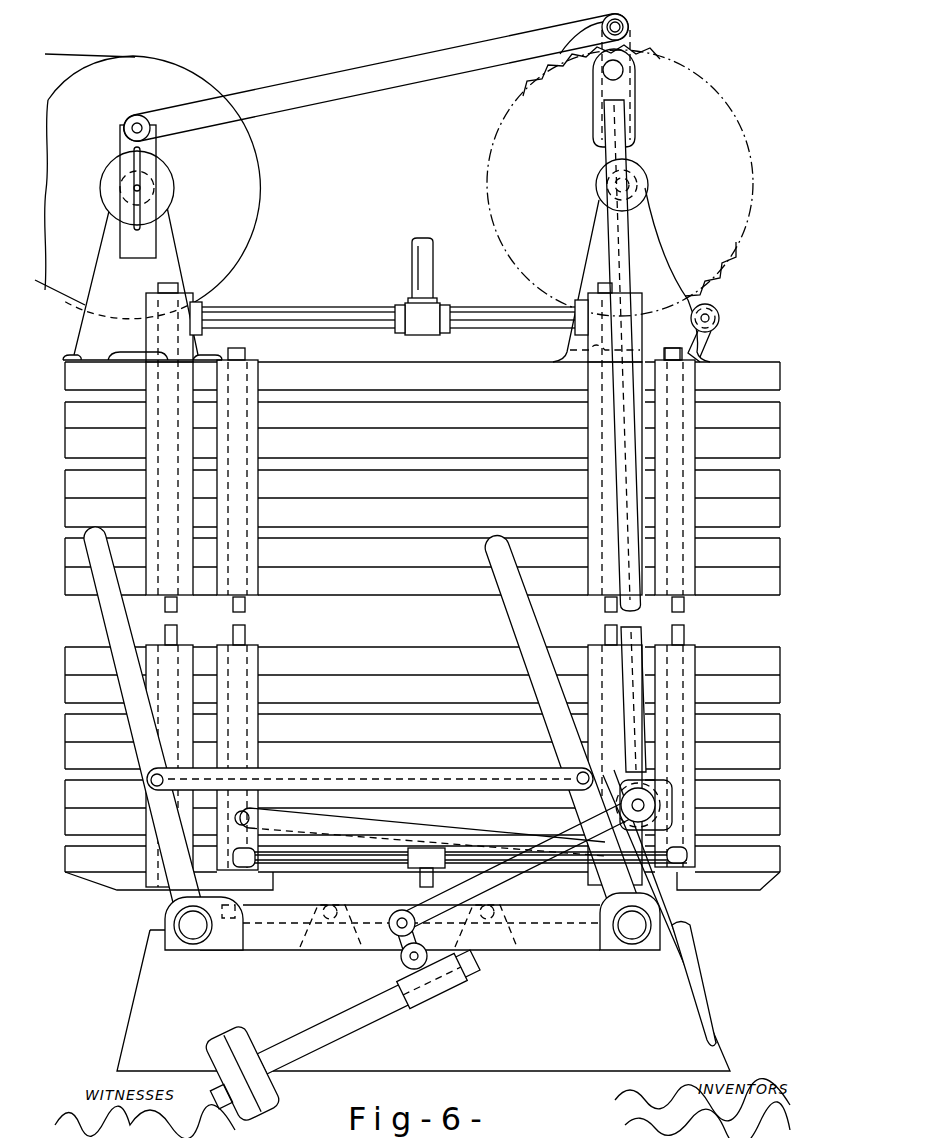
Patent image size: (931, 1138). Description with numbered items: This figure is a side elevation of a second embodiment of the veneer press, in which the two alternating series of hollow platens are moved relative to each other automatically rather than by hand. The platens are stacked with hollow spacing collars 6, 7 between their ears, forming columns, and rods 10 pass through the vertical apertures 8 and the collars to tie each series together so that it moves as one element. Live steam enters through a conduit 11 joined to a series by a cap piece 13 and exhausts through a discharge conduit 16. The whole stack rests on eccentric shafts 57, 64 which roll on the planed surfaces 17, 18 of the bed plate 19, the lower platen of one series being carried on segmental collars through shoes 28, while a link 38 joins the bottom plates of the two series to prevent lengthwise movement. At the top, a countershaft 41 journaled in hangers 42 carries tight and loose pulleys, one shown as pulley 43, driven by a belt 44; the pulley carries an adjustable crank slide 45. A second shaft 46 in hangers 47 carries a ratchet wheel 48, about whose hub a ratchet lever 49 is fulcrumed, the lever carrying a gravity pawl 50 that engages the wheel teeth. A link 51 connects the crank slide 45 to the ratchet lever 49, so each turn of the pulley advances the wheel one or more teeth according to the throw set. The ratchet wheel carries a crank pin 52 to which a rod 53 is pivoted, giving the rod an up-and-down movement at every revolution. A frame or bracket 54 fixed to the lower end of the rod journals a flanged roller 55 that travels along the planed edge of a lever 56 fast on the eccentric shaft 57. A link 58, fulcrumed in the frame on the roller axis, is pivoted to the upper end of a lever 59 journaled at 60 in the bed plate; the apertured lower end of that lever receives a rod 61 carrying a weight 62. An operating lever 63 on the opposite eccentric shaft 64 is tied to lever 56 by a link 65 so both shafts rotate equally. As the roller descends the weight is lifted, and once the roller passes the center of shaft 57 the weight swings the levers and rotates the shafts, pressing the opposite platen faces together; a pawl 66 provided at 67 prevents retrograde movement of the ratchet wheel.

The spacing collar 6 is at (592, 688).
The spacing collar 7 is at (250, 486).
The vertical aperture 8 is at (590, 443).
The rod 10 is at (232, 629).
The conduit 11 is at (424, 240).
The cap piece 13 is at (147, 331).
The discharge conduit 16 is at (326, 860).
The planed surface 17 is at (208, 952).
The planed surface 18 is at (625, 952).
The bed plate 19 is at (423, 920).
The shoe 28 is at (268, 890).
The link 38 is at (388, 833).
The countershaft 41 is at (140, 188).
The hanger 42 is at (142, 283).
The pulley 43 is at (154, 187).
The belt 44 is at (85, 170).
The crank slide 45 is at (126, 141).
The second shaft 46 is at (612, 186).
The hanger 47 is at (631, 275).
The ratchet wheel 48 is at (620, 183).
The ratchet lever 49 is at (620, 27).
The gravity pawl 50 is at (604, 21).
The link 51 is at (364, 78).
The crank pin 52 is at (623, 73).
The rod 53 is at (622, 270).
The frame or bracket 54 is at (650, 765).
The flanged roller 55 is at (646, 806).
The lever 56 is at (561, 720).
The eccentric shaft 57 is at (632, 925).
The link 58 is at (553, 838).
The lever 59 is at (400, 938).
The journal 60 is at (405, 968).
The rod 61 is at (368, 1012).
The weight 62 is at (236, 1077).
The operating lever 63 is at (108, 627).
The eccentric shaft 64 is at (193, 925).
The link 65 is at (370, 770).
The pawl 66 is at (706, 302).
The pawl mounting 67 is at (710, 318).